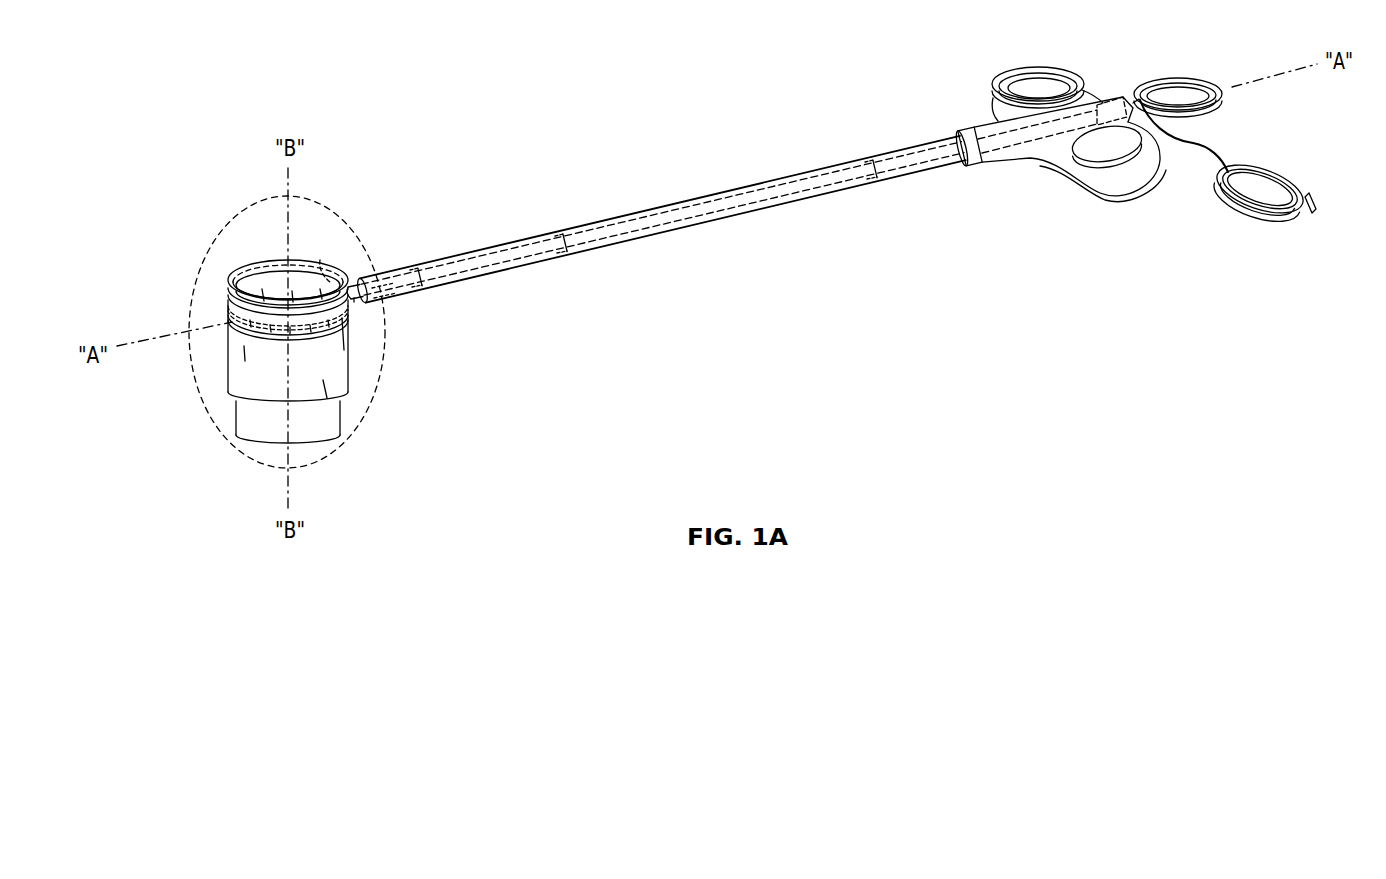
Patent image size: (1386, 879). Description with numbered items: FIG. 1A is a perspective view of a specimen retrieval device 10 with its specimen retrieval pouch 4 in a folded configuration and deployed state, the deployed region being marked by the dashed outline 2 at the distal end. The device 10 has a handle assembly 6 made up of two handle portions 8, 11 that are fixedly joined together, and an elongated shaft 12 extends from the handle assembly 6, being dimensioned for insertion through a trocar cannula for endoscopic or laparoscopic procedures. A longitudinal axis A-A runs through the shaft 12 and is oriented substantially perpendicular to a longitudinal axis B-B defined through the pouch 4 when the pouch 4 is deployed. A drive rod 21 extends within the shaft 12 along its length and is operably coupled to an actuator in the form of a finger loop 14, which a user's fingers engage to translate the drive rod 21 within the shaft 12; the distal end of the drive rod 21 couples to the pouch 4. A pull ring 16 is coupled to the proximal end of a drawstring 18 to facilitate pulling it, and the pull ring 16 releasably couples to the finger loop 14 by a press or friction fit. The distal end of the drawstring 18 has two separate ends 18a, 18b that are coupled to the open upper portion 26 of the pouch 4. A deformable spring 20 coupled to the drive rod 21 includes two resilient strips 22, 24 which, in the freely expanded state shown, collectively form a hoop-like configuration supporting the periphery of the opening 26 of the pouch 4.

The detail region 2 is at (238, 210).
The specimen retrieval pouch 4 is at (228, 370).
The handle assembly 6 is at (1149, 129).
The handle portion 8 is at (1083, 92).
The specimen retrieval device 10 is at (782, 256).
The handle portion 11 is at (1067, 172).
The shaft 12 is at (688, 195).
The finger loop 14 is at (1197, 82).
The pull ring 16 is at (1288, 175).
The drawstring 18 is at (587, 232).
The drawstring end 18a is at (318, 260).
The drawstring end 18b is at (228, 335).
The deformable spring 20 is at (365, 318).
The drive rod 21 is at (520, 250).
The resilient strip 22 is at (351, 290).
The resilient strip 24 is at (356, 300).
The open upper portion 26 is at (272, 288).